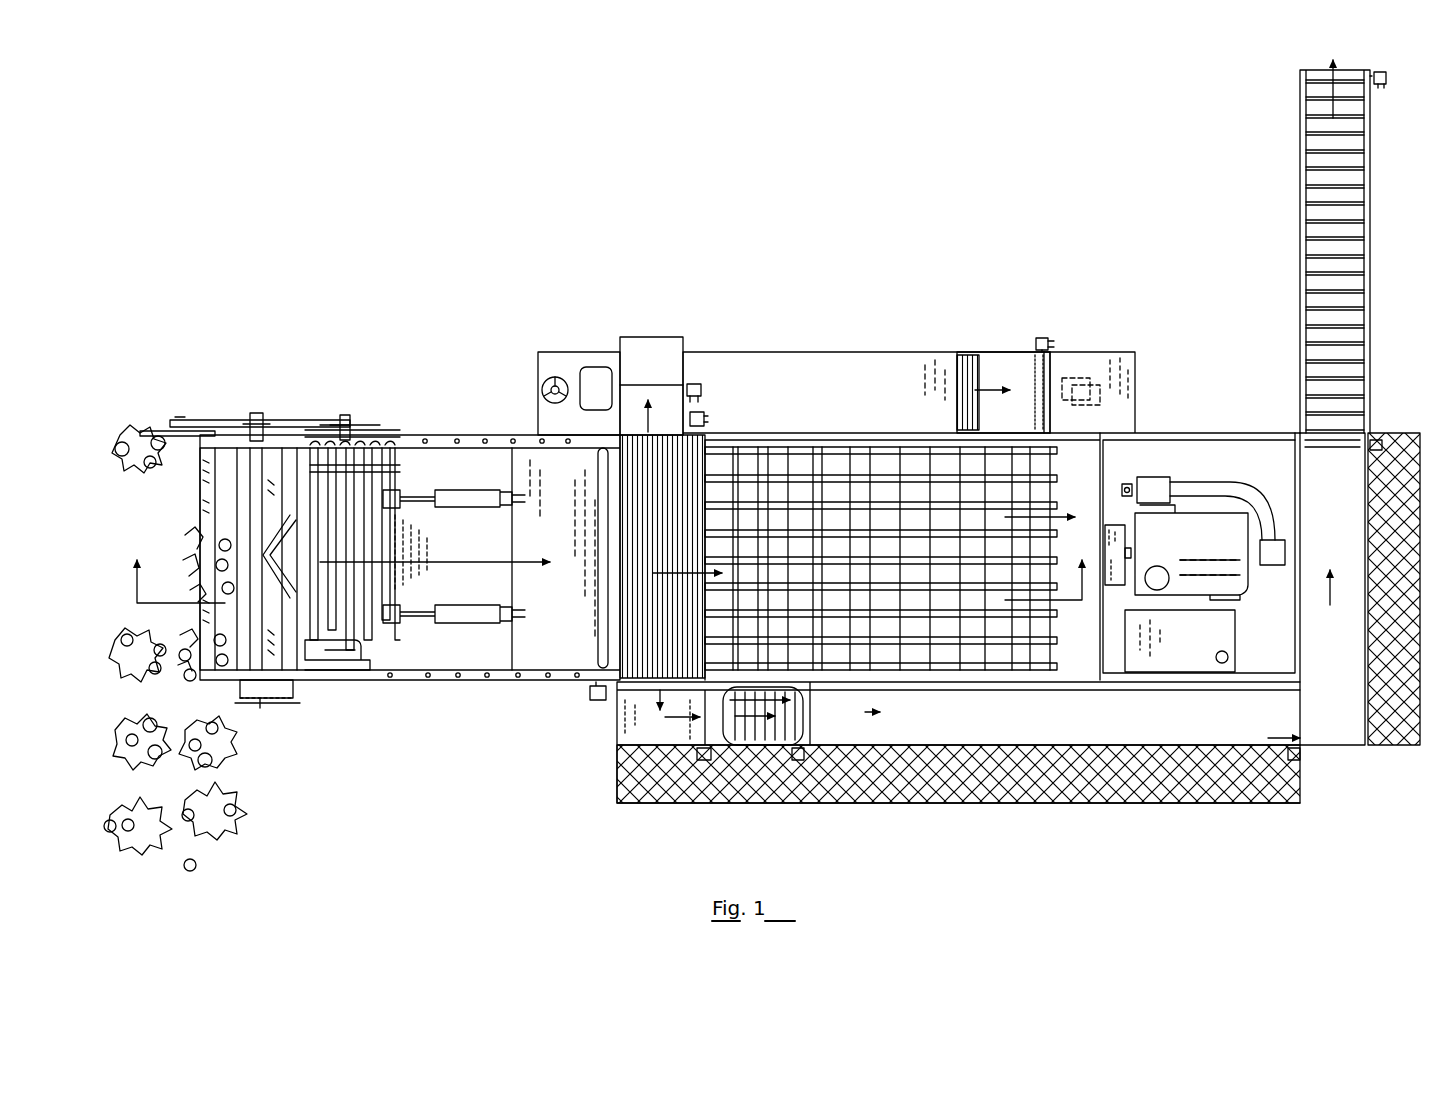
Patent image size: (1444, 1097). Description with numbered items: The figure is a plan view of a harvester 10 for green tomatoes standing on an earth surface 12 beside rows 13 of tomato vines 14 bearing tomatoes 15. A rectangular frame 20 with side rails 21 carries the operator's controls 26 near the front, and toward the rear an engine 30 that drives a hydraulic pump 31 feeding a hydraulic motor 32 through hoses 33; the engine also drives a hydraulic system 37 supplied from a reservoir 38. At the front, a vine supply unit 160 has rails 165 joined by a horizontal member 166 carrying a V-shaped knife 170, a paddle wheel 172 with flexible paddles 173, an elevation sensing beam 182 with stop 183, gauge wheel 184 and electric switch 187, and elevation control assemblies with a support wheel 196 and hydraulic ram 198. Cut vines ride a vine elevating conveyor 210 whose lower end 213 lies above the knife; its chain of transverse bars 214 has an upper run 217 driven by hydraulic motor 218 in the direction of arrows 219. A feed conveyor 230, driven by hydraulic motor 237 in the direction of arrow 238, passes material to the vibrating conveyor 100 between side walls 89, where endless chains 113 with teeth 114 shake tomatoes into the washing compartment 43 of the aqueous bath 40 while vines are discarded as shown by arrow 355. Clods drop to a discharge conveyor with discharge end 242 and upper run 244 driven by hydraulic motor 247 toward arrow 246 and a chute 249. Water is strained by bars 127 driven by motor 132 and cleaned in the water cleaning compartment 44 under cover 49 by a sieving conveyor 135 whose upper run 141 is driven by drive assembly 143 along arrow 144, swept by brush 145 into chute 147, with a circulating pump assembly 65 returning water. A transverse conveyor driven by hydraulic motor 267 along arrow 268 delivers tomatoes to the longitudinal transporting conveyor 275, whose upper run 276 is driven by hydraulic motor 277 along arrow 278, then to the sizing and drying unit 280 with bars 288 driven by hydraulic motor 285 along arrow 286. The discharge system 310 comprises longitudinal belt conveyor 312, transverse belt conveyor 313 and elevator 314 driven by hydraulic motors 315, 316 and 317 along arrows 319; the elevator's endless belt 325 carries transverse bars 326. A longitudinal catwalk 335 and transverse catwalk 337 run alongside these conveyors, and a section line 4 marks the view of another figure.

The harvester 10 is at (821, 236).
The earth surface 12 is at (380, 821).
The rows 13 is at (120, 668).
The tomato vines 14 is at (125, 462).
The tomatoes 15 is at (116, 448).
The frame 20 is at (1200, 428).
The side rails 21 is at (1262, 434).
The operator's controls 26 is at (566, 368).
The engine 30 is at (1180, 560).
The hydraulic pump 31 is at (1275, 560).
The hydraulic motor 32 is at (1160, 484).
The hoses 33 is at (1238, 490).
The hydraulic system 37 is at (1115, 572).
The reservoir 38 is at (1178, 660).
The aqueous bath 40 is at (992, 662).
The tomato washing compartment 43 is at (798, 452).
The water cleaning compartment 44 is at (890, 375).
The cover 49 is at (866, 403).
The circulating pump assembly 65 is at (1074, 365).
The side walls 89 is at (846, 447).
The vibrating conveyor 100 is at (928, 660).
The endless chain 113 is at (978, 517).
The teeth 114 is at (955, 582).
The bars 127 is at (780, 455).
The motor 132 is at (678, 706).
The sieving conveyor 135 is at (975, 370).
The upper run 141 is at (1013, 428).
The hydraulic drive assembly 143 is at (1041, 337).
The arrow 144 is at (972, 392).
The cylindrical bristle brush 145 is at (1050, 405).
The chute 147 is at (1135, 385).
The vine supply unit 160 is at (329, 300).
The rails 165 is at (496, 445).
The horizontal member 166 is at (298, 688).
The knife 170 is at (262, 555).
The paddle wheel 172 is at (198, 503).
The flexible paddles 173 is at (205, 566).
The beam 182 is at (222, 418).
The stop 183 is at (350, 418).
The gauge wheel 184 is at (148, 428).
The electric switch 187 is at (258, 412).
The support wheel 196 is at (345, 650).
The hydraulic ram 198 is at (485, 508).
The vine elevating conveyor 210 is at (412, 436).
The lower end 213 is at (320, 440).
The transverse bars 214 is at (385, 485).
The upper run 217 is at (596, 452).
The hydraulic motor 218 is at (596, 700).
The arrows 219 is at (488, 562).
The feed conveyor 230 is at (616, 642).
The hydraulic motor 237 is at (704, 412).
The arrow 238 is at (665, 570).
The discharge end 242 is at (632, 385).
The upper run 244 is at (620, 427).
The arrow 246 is at (650, 405).
The hydraulic motor 247 is at (694, 383).
The chute 249 is at (646, 340).
The hydraulic motor 267 is at (680, 635).
The arrow 268 is at (660, 692).
The longitudinal transporting belt conveyor 275 is at (668, 750).
The upper run 276 is at (662, 738).
The hydraulic motor 277 is at (704, 760).
The arrow 278 is at (682, 748).
The sizing and drying unit 280 is at (798, 700).
The hydraulic motor 285 is at (798, 760).
The arrow 286 is at (775, 727).
The bars 288 is at (760, 745).
The processed tomato discharge system 310 is at (1340, 752).
The longitudinal belt conveyor 312 is at (1017, 736).
The transverse belt conveyor 313 is at (1350, 481).
The elevator 314 is at (1372, 250).
The hydraulic motor 315 is at (1298, 758).
The hydraulic motor 316 is at (1378, 440).
The hydraulic motor 317 is at (1386, 76).
The arrows 319 is at (1333, 98).
The endless belt 325 is at (1318, 203).
The transverse bars 326 is at (1362, 315).
The longitudinal catwalk 335 is at (1062, 780).
The transverse catwalk 337 is at (1372, 520).
The arrow 355 is at (1052, 518).
The section line 4 is at (608, 564).